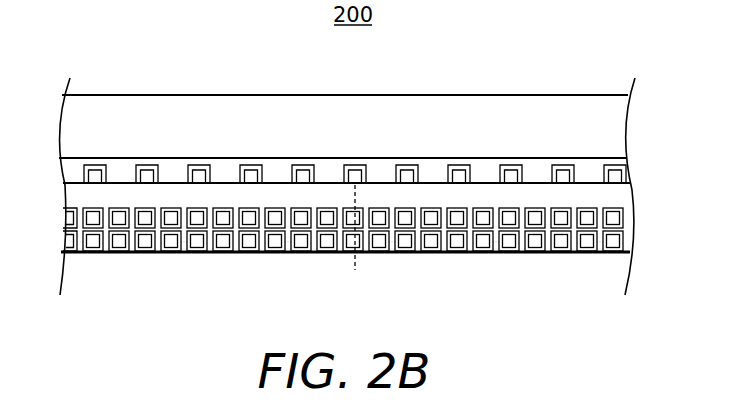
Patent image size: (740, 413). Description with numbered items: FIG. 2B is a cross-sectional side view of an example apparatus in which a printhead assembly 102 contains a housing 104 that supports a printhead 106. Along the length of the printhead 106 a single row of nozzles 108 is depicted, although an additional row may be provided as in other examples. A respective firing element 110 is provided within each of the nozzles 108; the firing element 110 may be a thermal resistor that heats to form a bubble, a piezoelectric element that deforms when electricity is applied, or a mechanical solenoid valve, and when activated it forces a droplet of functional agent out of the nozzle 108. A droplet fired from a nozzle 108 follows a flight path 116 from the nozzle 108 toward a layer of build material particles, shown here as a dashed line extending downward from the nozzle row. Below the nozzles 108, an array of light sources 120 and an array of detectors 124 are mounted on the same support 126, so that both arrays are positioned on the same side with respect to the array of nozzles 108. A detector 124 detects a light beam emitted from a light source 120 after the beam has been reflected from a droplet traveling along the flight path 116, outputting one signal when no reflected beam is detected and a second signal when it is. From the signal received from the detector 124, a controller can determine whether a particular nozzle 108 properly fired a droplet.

The printhead assembly 102 is at (182, 55).
The housing 104 is at (452, 95).
The printhead 106 is at (472, 157).
The nozzles 108 is at (345, 168).
The firing element 110 is at (355, 163).
The flight path 116 is at (355, 268).
The light sources 120 is at (240, 230).
The detectors 124 is at (332, 252).
The support 126 is at (527, 253).